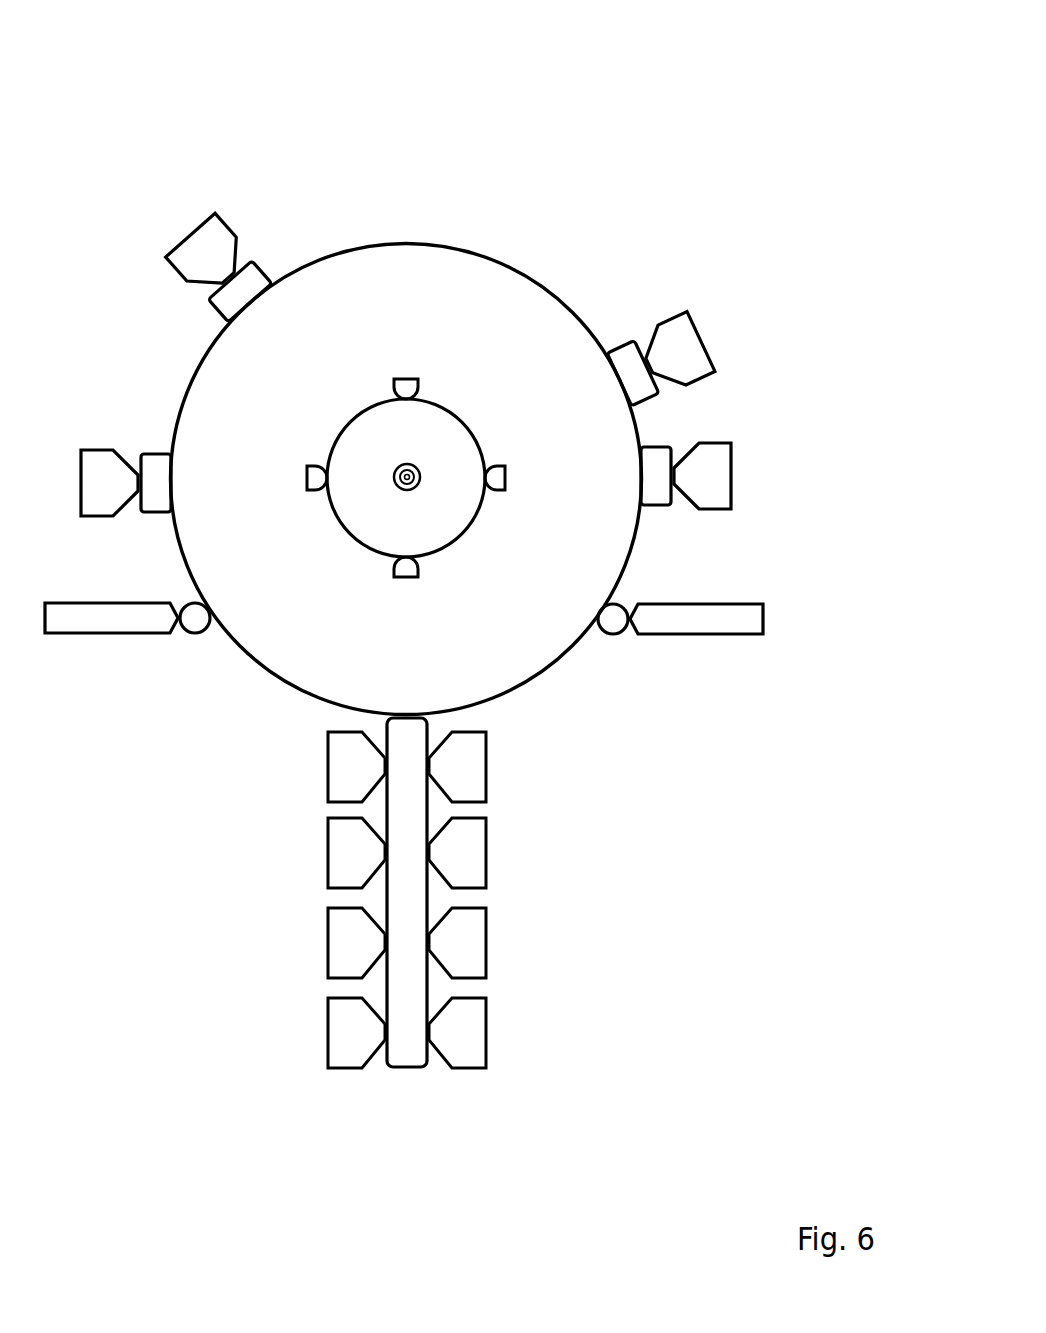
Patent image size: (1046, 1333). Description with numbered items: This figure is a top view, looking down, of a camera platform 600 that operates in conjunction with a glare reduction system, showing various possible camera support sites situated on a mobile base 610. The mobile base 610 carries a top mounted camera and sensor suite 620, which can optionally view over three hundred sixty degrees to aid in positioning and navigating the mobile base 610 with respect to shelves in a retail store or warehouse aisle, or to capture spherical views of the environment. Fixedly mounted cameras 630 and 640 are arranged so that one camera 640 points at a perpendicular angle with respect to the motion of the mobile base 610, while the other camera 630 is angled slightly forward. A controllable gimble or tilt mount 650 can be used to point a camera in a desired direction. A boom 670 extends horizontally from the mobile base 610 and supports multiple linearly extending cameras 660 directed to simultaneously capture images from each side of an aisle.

The camera platform 600 is at (697, 55).
The mobile base 610 is at (518, 272).
The camera and sensor suite 620 is at (355, 408).
The fixedly mounted camera 630 is at (712, 342).
The fixedly mounted camera 640 is at (743, 437).
The controllable gimble or tilt mount 650 is at (630, 590).
The fins 660 is at (533, 852).
The boom 670 is at (428, 1090).